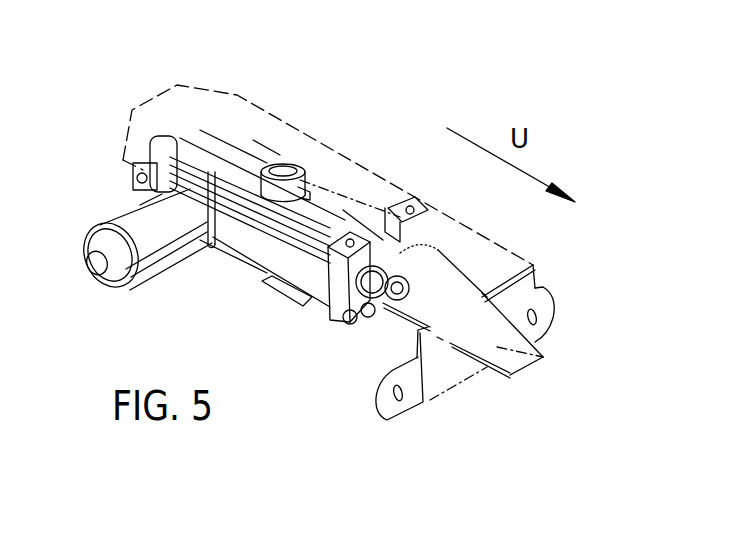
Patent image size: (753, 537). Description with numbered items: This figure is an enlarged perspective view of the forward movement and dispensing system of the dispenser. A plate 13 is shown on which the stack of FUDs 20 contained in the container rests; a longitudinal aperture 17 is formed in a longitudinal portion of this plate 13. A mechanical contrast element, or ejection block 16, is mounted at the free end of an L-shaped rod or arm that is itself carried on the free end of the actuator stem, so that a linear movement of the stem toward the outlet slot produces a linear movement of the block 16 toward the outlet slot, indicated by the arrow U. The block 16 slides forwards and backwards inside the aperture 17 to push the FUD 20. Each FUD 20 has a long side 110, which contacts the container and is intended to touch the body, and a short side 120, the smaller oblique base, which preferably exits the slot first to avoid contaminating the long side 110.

The plate 13 is at (197, 113).
The mechanical contrast element 16 is at (292, 165).
The longitudinal aperture 17 is at (360, 217).
The long side 110 is at (422, 255).
The FUD 20 is at (545, 358).
The short side 120 is at (513, 375).